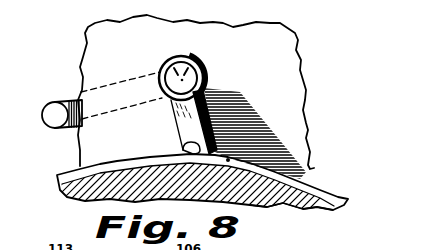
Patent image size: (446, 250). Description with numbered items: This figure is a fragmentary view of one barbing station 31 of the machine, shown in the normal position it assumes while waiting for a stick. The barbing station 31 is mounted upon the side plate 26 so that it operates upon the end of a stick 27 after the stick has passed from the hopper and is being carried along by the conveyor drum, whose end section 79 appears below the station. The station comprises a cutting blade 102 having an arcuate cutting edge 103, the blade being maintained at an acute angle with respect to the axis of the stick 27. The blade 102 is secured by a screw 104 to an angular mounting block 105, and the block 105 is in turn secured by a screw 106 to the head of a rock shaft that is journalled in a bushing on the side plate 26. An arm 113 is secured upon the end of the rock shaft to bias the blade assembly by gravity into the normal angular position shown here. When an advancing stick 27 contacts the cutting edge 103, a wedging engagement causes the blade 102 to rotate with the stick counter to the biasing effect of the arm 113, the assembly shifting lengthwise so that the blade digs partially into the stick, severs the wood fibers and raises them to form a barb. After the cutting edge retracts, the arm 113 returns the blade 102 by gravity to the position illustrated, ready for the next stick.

The side plate 26 is at (274, 29).
The stick 27 is at (115, 160).
The end section 79 is at (303, 207).
The arm 113 is at (71, 100).
The cutting blade 102 is at (172, 111).
The arcuate cutting edge 103 is at (185, 148).
The barbing station 31 is at (172, 61).
The screw 106 is at (199, 61).
The angular mounting block 105 is at (212, 86).
The screw 104 is at (227, 93).